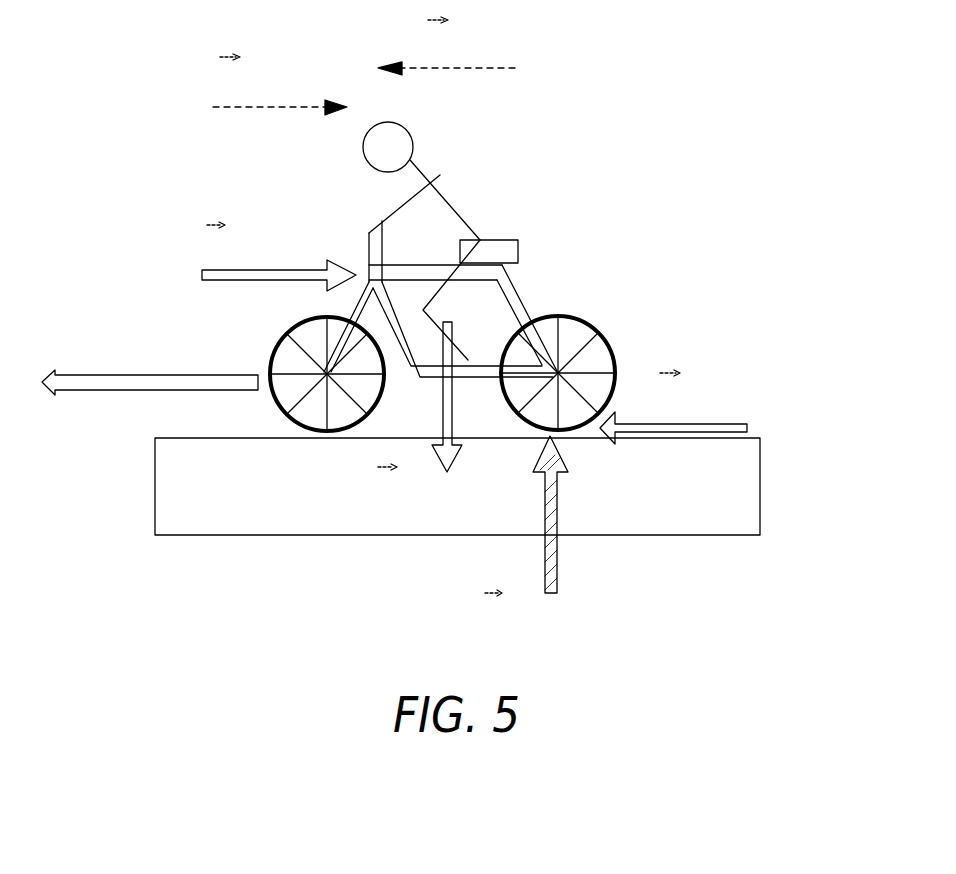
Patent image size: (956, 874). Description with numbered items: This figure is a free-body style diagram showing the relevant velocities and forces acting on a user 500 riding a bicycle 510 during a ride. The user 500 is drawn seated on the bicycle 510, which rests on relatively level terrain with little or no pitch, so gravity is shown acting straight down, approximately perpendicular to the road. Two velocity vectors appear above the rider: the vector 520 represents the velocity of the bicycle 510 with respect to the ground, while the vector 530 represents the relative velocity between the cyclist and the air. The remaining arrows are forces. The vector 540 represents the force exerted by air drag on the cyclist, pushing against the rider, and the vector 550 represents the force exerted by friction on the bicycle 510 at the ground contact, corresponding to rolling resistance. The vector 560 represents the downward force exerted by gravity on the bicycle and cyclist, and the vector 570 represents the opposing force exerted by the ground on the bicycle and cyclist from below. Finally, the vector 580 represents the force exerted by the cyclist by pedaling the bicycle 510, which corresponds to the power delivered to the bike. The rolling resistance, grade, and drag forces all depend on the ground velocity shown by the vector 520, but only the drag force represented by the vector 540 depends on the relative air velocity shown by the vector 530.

The user 500 is at (363, 153).
The bicycle 510 is at (522, 298).
The bicycle ground velocity vector 520 is at (430, 33).
The relative air velocity vector 530 is at (222, 72).
The air drag force vector 540 is at (205, 243).
The friction force vector 550 is at (762, 392).
The gravity force vector 560 is at (377, 483).
The ground force vector 570 is at (480, 612).
The cyclist pedaling force vector 580 is at (153, 348).